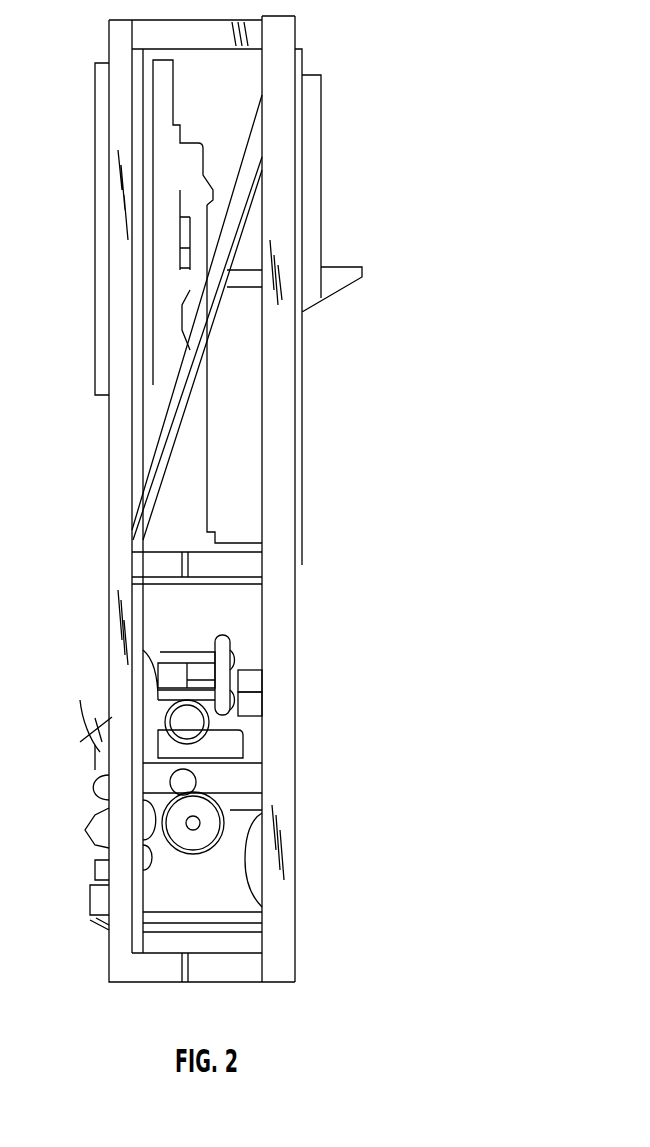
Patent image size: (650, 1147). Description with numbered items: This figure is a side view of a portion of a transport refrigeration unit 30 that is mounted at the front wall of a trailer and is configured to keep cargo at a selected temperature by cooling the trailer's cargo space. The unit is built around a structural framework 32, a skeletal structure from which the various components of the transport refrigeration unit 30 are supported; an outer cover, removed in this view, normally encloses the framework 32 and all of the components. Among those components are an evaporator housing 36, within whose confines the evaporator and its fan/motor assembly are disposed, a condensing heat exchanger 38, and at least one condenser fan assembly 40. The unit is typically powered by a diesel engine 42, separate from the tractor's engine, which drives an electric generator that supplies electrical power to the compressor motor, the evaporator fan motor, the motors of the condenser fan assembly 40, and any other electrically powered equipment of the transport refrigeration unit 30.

The transport refrigeration unit 30 is at (423, 103).
The structural framework 32 is at (303, 393).
The evaporator housing 36 is at (312, 285).
The condensing heat exchanger 38 is at (95, 148).
The condenser fan assembly 40 is at (153, 298).
The diesel engine 42 is at (97, 724).